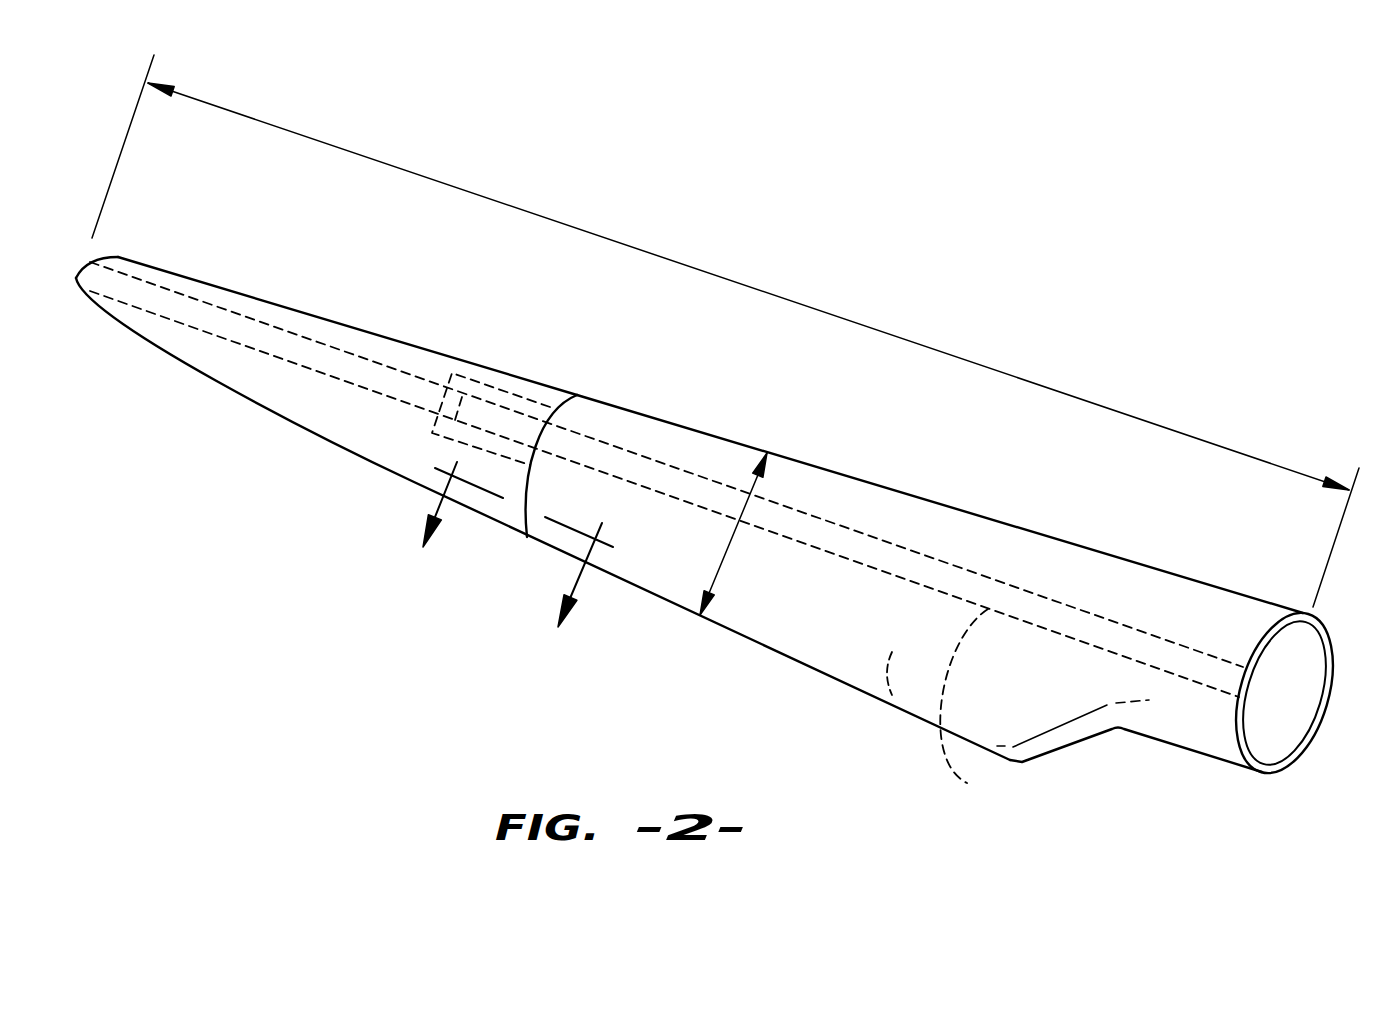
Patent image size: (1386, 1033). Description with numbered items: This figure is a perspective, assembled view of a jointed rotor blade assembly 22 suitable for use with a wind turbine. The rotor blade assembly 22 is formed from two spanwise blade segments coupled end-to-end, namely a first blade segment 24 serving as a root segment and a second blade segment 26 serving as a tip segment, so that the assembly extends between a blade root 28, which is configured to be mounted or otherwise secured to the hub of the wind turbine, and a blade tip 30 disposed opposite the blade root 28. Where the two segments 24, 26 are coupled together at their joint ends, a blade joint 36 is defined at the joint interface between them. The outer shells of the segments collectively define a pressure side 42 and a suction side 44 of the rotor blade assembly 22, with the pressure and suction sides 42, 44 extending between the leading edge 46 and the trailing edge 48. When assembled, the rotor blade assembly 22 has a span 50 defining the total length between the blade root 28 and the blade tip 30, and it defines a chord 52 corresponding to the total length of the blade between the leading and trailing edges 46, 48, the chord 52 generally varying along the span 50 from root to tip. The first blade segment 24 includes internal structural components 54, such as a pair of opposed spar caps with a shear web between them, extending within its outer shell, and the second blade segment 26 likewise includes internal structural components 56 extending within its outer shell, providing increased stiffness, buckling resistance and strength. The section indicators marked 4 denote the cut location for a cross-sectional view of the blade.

The section line of FIG. 4 is at (501, 566).
The jointed rotor blade assembly 22 is at (1180, 217).
The first blade segment 24 is at (910, 517).
The second blade segment 26 is at (297, 312).
The blade root 28 is at (1331, 640).
The blade tip 30 is at (72, 277).
The blade joint 36 is at (572, 398).
The pressure side 42 is at (887, 707).
The suction side 44 is at (775, 623).
The leading edge 46 is at (1062, 538).
The trailing edge 48 is at (638, 593).
The span 50 is at (773, 293).
The chord 52 is at (751, 493).
The internal structural components 54 is at (972, 715).
The internal structural components 56 is at (243, 346).